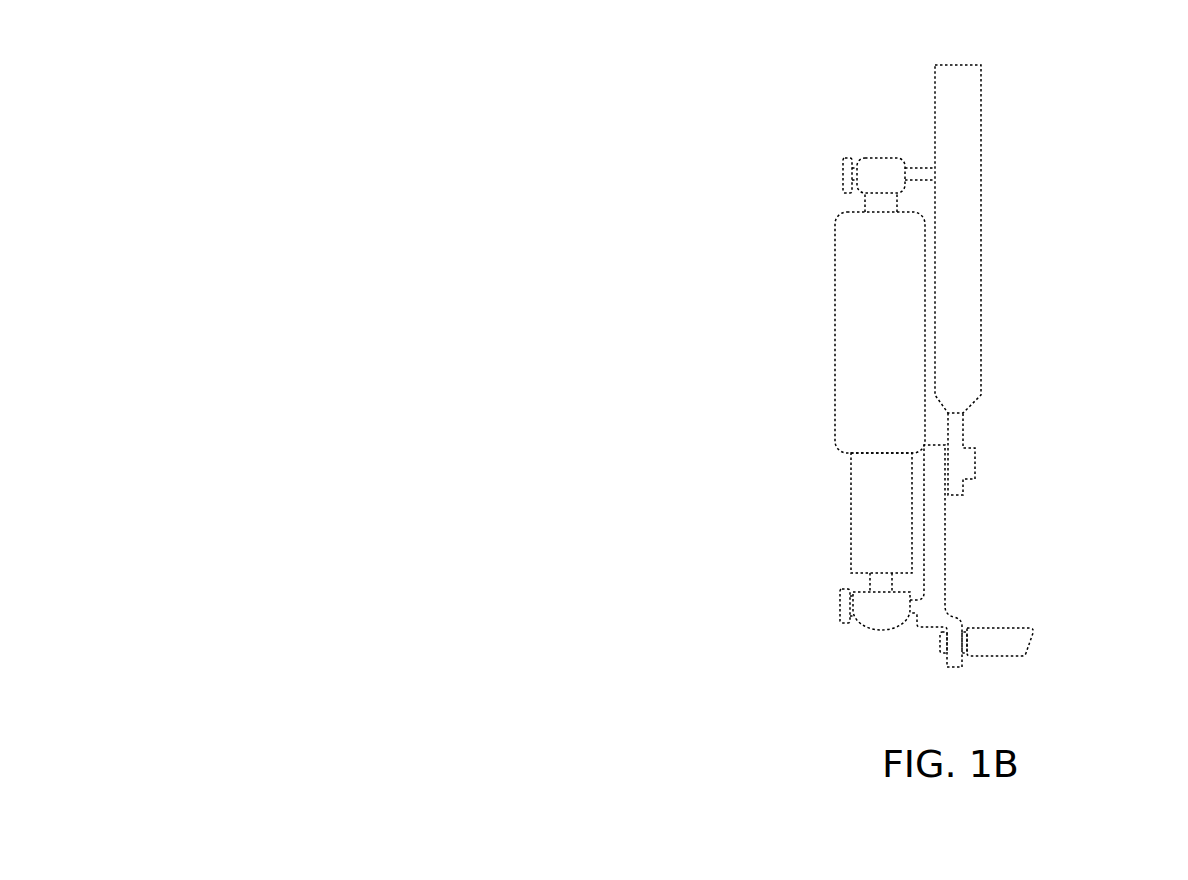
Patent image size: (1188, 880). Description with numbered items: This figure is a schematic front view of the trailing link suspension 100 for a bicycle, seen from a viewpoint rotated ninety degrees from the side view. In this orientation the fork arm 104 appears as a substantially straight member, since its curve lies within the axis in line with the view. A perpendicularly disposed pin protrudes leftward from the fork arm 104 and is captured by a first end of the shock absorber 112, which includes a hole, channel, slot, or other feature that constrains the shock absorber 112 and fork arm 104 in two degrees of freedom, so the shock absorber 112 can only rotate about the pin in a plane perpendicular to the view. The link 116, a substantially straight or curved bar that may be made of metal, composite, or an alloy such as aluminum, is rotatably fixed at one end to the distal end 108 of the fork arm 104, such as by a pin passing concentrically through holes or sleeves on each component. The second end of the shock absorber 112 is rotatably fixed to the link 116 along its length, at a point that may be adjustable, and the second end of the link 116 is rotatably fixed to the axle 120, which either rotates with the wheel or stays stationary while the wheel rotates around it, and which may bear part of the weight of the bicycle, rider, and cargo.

The trailing link suspension 100 is at (303, 133).
The fork arm 104 is at (958, 256).
The distal end 108 is at (958, 450).
The shock absorber 112 is at (863, 328).
The link 116 is at (937, 553).
The axle 120 is at (1012, 647).